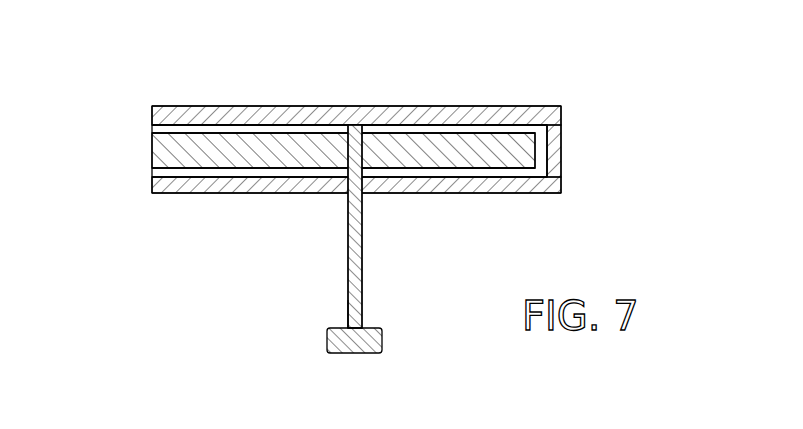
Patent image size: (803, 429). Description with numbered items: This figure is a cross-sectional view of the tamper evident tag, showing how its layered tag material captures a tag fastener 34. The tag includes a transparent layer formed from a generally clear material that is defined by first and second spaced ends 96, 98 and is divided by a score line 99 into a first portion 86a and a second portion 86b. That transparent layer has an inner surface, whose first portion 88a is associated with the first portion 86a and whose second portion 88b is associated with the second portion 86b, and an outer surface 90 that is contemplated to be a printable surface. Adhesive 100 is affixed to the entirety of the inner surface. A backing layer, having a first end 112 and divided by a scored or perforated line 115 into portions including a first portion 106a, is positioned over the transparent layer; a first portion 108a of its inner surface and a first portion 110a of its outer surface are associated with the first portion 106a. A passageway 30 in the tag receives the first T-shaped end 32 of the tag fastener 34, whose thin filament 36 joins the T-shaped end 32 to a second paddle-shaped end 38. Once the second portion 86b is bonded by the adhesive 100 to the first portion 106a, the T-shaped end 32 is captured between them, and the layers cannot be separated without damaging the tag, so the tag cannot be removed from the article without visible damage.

The passageway 30 is at (350, 251).
The T-shaped end 32 is at (374, 126).
The tag fastener 34 is at (328, 300).
The filament 36 is at (363, 270).
The paddle-shaped end 38 is at (385, 352).
The first portion of transparent layer 86a is at (177, 196).
The second portion of transparent layer 86b is at (307, 104).
The first portion of inner surface 88a is at (250, 170).
The second portion of inner surface 88b is at (183, 130).
The outer surface 90 is at (225, 106).
The first end 96 is at (152, 185).
The second end 98 is at (151, 109).
The score line 99 is at (566, 167).
The adhesive 100 is at (473, 133).
The first portion of backing layer 106a is at (540, 112).
The first portion of inner surface of backing layer 108a is at (482, 168).
The first portion of outer surface of backing layer 110a is at (438, 130).
The first end of backing layer 112 is at (152, 148).
The perforated line 115 is at (541, 168).